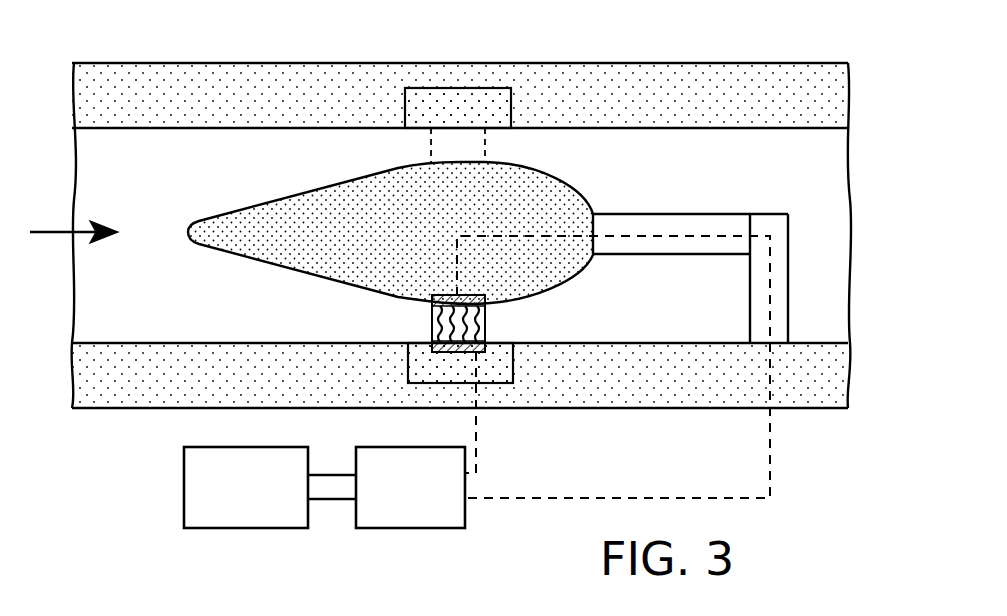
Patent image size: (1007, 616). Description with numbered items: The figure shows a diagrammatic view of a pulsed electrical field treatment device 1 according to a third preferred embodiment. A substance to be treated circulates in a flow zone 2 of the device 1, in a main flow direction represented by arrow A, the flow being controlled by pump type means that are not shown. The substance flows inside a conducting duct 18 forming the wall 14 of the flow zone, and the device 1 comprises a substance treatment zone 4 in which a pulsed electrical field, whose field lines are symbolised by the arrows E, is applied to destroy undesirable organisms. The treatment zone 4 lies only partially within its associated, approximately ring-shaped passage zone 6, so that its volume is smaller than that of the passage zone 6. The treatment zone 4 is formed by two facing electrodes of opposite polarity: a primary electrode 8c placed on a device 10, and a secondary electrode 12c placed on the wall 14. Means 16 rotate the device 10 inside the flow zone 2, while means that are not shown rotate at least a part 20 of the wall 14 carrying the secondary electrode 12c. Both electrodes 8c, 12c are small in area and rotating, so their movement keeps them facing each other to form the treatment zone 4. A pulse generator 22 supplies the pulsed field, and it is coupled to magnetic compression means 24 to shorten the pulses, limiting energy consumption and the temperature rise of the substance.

The pulsed electrical field treatment device 1 is at (640, 53).
The flow zone 2 is at (163, 176).
The substance treatment zone 4 is at (425, 345).
The passage zone 6 is at (477, 147).
The primary electrode 8c is at (395, 305).
The device 10 is at (302, 272).
The secondary electrode 12c is at (482, 360).
The wall 14 is at (752, 128).
The means of rotating the device 16 is at (690, 246).
The conducting duct 18 is at (228, 82).
The part of the wall 20 is at (410, 138).
The pulse generator 22 is at (268, 518).
The magnetic compression means 24 is at (440, 522).
The arrow A is at (74, 222).
The arrows E is at (490, 330).